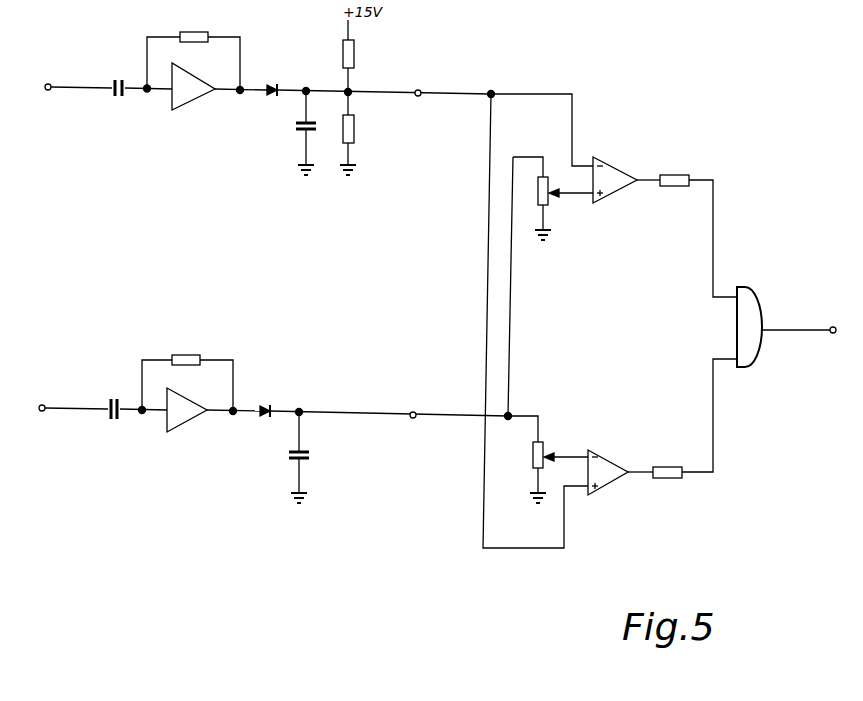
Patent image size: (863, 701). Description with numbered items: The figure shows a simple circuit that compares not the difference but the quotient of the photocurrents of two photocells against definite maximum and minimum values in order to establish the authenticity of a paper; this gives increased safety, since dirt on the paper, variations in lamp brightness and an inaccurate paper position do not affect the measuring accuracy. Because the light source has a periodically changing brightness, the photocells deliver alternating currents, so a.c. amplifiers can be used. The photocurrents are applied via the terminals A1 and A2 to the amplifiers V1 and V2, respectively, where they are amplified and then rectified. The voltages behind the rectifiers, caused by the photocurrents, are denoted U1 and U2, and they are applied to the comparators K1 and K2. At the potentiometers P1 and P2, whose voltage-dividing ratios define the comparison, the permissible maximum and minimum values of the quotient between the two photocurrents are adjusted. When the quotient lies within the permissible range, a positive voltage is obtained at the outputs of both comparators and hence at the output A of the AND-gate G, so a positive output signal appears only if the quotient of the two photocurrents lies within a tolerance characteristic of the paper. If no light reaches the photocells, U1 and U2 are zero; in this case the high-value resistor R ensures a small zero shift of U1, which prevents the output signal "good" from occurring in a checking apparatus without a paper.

The terminal A1 is at (42, 79).
The terminal A2 is at (35, 400).
The amplifier V1 is at (193, 61).
The amplifier V2 is at (187, 384).
The high-value resistor R is at (355, 54).
The voltage behind the rectifier U1 is at (420, 83).
The voltage behind the rectifier U2 is at (415, 405).
The comparator K1 is at (615, 171).
The comparator K2 is at (608, 466).
The potentiometer P1 is at (553, 198).
The potentiometer P2 is at (545, 459).
The AND-gate G is at (751, 349).
The output A is at (799, 322).